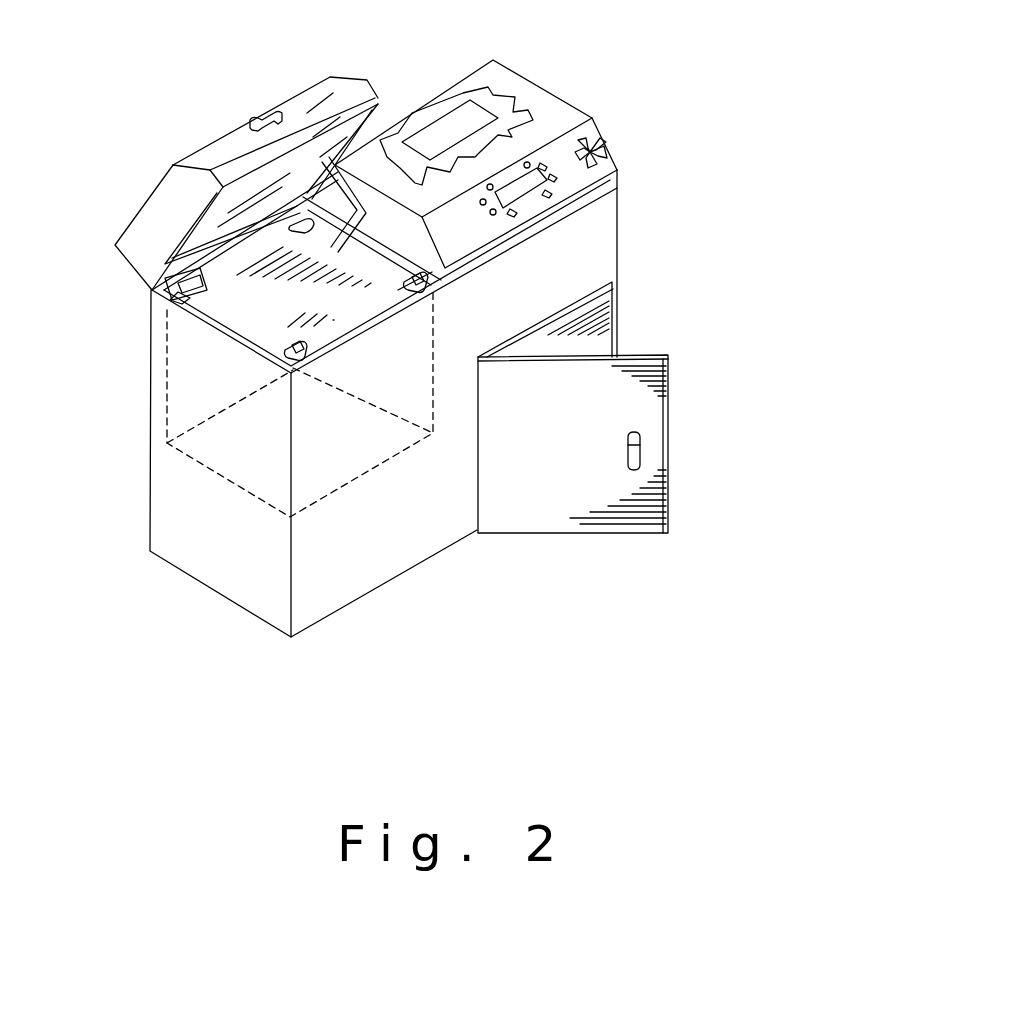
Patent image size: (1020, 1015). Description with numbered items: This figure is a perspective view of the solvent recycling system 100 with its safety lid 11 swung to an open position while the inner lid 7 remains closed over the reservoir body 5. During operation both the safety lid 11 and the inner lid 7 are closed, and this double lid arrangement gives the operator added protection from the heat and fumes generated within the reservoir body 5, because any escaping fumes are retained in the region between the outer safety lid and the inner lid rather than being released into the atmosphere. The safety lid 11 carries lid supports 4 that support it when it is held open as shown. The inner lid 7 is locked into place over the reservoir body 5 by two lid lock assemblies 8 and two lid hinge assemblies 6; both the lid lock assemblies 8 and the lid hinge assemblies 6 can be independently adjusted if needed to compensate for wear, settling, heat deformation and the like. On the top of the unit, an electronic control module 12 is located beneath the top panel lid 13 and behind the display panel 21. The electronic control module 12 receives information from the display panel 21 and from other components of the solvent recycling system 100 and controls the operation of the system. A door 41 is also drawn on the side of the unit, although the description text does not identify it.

The solvent recycling system 100 is at (690, 203).
The reservoir body 5 is at (267, 475).
The safety lid 11 is at (217, 145).
The lid hinge assemblies 6 is at (300, 218).
The lid supports 4 is at (355, 205).
The inner lid 7 is at (258, 333).
The lid lock assemblies 8 is at (420, 295).
The electronic control module 12 is at (462, 115).
The top panel lid 13 is at (540, 101).
The display panel 21 is at (573, 177).
The door 41 is at (632, 413).